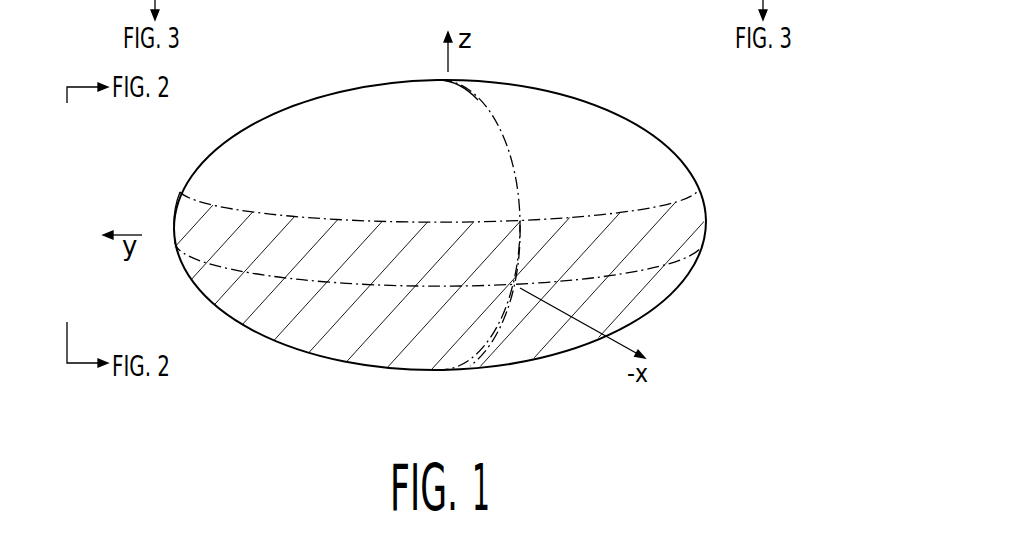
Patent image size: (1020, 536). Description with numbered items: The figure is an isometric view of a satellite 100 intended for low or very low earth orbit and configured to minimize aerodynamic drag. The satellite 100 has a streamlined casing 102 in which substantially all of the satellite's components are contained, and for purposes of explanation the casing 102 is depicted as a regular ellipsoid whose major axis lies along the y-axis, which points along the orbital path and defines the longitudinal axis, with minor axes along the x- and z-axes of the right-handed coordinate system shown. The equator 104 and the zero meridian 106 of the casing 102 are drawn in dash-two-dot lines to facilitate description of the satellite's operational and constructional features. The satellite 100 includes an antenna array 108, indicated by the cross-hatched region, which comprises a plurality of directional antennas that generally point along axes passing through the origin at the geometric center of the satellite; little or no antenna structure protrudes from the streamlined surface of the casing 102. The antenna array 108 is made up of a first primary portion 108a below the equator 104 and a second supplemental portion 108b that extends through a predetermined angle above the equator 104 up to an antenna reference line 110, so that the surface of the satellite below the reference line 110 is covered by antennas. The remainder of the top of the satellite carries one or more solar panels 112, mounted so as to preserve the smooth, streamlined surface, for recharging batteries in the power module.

The satellite 100 is at (703, 137).
The casing 102 is at (330, 113).
The equator 104 is at (656, 266).
The zero meridian 106 is at (508, 138).
The antenna array 108 is at (312, 333).
The first primary portion 108a is at (535, 343).
The second supplemental portion 108b is at (694, 230).
The antenna reference line 110 is at (182, 198).
The solar panels 112 is at (510, 100).